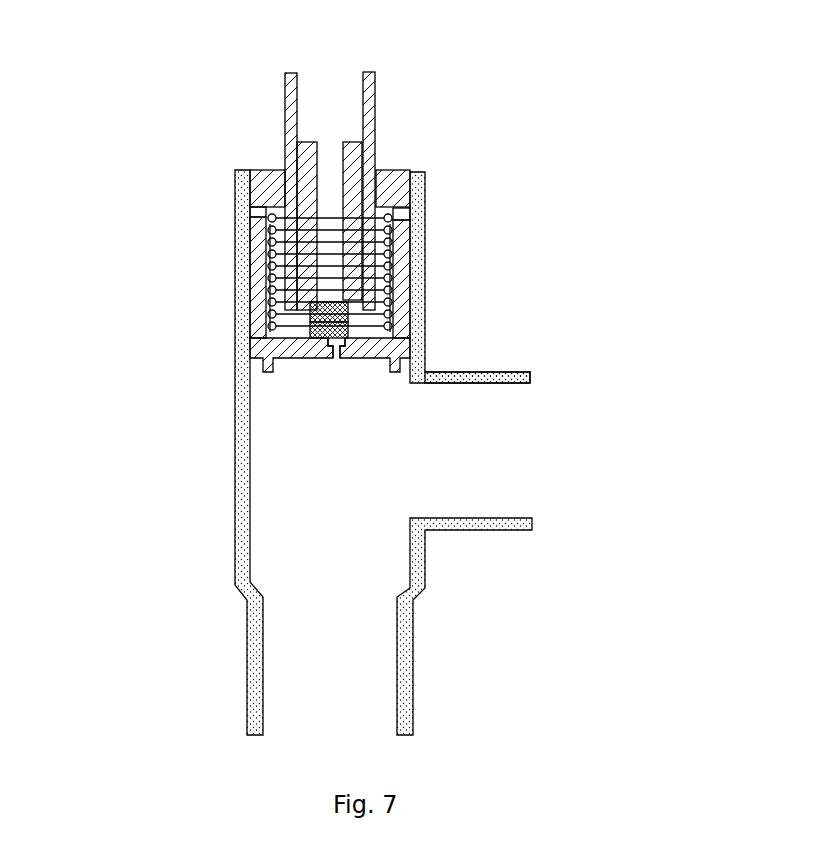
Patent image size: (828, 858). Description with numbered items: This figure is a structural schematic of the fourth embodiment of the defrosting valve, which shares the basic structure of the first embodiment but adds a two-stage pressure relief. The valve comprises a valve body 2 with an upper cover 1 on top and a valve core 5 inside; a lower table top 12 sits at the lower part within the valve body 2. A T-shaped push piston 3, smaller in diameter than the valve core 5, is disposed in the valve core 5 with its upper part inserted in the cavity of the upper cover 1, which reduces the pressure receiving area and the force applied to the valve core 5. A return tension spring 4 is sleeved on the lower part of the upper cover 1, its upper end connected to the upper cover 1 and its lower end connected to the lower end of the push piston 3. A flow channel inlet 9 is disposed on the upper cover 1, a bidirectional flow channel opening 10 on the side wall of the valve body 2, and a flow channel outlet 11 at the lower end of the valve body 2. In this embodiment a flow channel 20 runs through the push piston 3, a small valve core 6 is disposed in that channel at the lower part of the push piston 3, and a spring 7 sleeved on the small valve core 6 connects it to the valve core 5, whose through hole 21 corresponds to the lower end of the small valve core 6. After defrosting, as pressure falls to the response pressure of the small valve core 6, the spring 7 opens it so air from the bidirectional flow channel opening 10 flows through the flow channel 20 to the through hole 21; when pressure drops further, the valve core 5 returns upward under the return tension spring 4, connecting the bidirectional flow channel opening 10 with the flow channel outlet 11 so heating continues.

The upper cover 1 is at (390, 201).
The valve body 2 is at (427, 217).
The push piston 3 is at (285, 160).
The return tension spring 4 is at (253, 248).
The valve core 5 is at (257, 327).
The small valve core 6 is at (335, 302).
The spring 7 is at (340, 330).
The flow channel inlet 9 is at (347, 117).
The bidirectional flow channel opening 10 is at (447, 420).
The flow channel outlet 11 is at (360, 688).
The lower table top 12 is at (423, 588).
The flow channel 20 is at (343, 182).
The through hole 21 is at (333, 357).